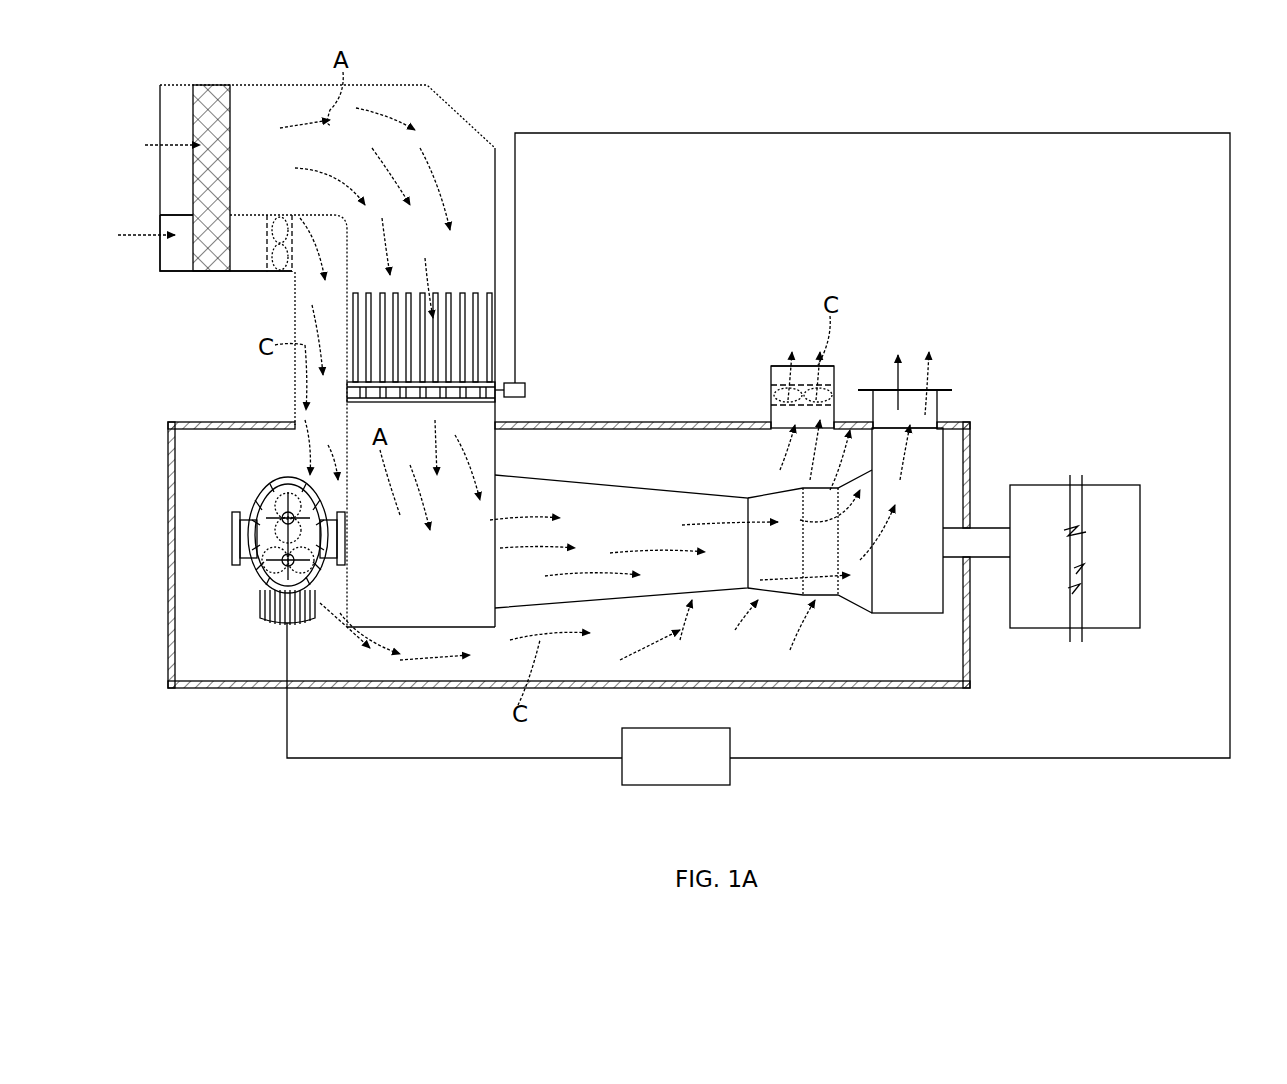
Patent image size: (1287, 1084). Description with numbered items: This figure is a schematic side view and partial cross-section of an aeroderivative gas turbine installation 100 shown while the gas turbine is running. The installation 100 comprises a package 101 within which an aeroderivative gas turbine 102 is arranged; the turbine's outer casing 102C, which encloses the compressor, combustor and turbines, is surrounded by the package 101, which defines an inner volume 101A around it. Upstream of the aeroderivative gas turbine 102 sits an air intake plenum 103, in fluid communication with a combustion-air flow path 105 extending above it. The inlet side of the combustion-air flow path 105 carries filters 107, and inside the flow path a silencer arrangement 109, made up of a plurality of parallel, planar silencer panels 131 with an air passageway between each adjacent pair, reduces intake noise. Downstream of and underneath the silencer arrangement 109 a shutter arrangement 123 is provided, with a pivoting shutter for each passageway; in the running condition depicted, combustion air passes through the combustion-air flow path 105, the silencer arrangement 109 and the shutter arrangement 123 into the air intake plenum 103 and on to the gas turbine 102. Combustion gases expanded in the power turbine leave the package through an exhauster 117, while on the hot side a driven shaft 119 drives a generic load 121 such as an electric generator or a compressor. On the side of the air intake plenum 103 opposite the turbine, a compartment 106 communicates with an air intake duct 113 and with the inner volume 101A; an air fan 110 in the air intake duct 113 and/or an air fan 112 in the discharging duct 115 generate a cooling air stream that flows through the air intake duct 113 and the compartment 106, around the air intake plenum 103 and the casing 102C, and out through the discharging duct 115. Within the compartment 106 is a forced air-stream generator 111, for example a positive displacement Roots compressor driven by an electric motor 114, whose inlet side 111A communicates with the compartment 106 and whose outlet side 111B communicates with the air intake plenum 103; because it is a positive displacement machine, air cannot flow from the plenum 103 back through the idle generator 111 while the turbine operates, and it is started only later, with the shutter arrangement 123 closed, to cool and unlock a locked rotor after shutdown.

The installation 100 is at (862, 365).
The package 101 is at (645, 425).
The inner volume 101A is at (876, 659).
The aeroderivative gas turbine 102 is at (719, 546).
The outer casing 102C is at (682, 484).
The air intake plenum 103 is at (470, 607).
The combustion-air flow path 105 is at (448, 128).
The compartment 106 is at (184, 596).
The filters 107 is at (208, 90).
The silencer arrangement 109 is at (474, 322).
The air fan 110 is at (292, 276).
The forced air-stream generator 111 is at (309, 522).
The inlet side 111A is at (238, 540).
The outlet side 111B is at (337, 553).
The air fan 112 is at (778, 365).
The air intake duct 113 is at (246, 263).
The electric motor 114 is at (263, 607).
The discharging duct 115 is at (771, 380).
The exhauster 117 is at (938, 403).
The driven shaft 119 is at (983, 542).
The load 121 is at (1110, 493).
The shutter arrangement 123 is at (530, 375).
The silencer panels 131 is at (450, 293).